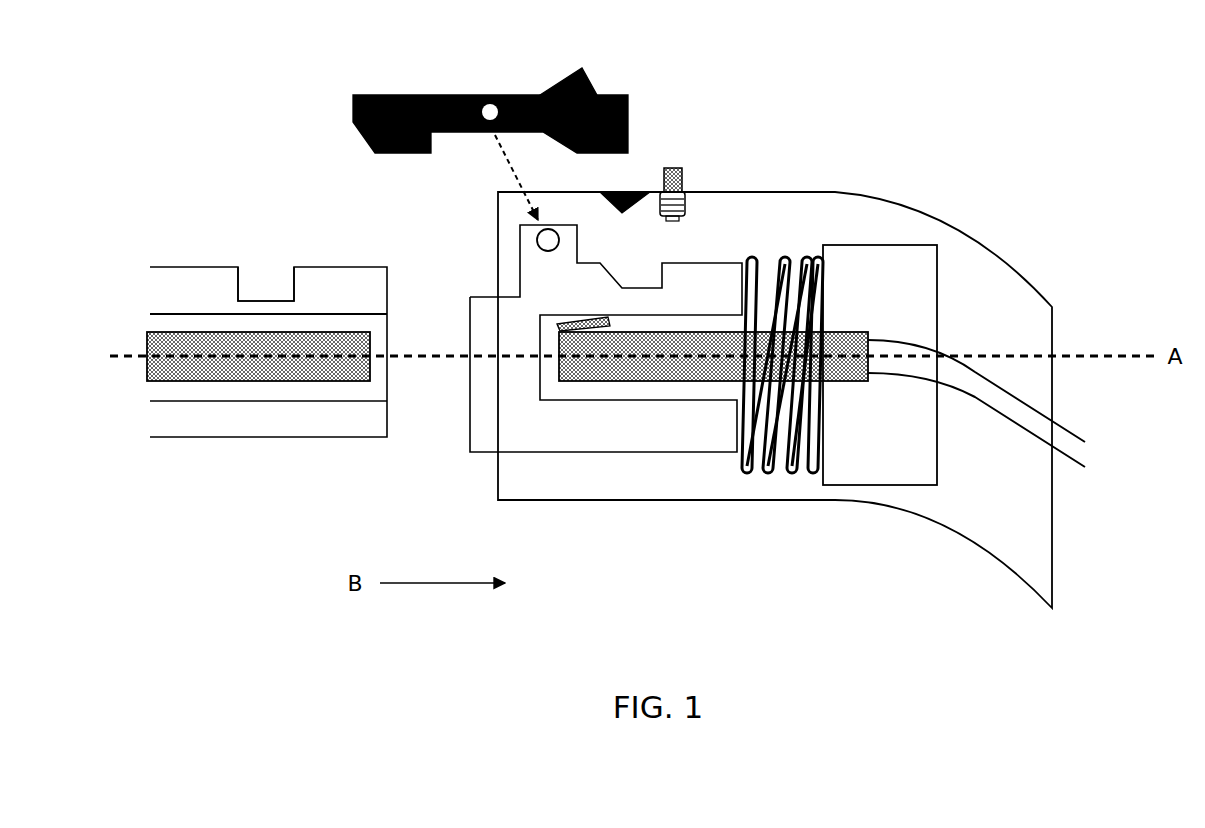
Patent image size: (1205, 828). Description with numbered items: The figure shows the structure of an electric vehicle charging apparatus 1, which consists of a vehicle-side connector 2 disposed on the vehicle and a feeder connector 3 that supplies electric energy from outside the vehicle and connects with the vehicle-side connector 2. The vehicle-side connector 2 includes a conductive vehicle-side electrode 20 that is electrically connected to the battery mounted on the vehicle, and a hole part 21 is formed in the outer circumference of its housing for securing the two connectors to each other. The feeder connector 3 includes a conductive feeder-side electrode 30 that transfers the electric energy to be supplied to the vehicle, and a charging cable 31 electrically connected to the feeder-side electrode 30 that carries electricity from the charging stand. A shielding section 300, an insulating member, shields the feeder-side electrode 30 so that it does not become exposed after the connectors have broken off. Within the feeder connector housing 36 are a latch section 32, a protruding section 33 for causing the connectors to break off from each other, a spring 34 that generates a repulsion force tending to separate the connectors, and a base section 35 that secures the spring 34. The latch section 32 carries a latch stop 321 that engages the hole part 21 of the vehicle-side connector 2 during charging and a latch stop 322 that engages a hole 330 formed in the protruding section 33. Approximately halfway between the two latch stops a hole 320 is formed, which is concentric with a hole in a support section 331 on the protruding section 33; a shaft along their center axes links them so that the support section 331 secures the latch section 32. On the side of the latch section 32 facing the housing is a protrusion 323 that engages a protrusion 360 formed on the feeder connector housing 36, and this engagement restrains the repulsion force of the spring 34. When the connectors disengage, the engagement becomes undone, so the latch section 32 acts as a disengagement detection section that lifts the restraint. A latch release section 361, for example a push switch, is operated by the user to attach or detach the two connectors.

The electric vehicle charging apparatus 1 is at (232, 158).
The vehicle-side connector 2 is at (342, 267).
The vehicle-side electrode 20 is at (237, 386).
The hole part 21 is at (267, 270).
The feeder connector 3 is at (745, 361).
The feeder-side electrode 30 is at (610, 386).
The shielding section 300 is at (583, 314).
The charging cable 31 is at (1022, 393).
The latch section 32 is at (494, 89).
The hole 320 is at (497, 94).
The latch stop 321 is at (352, 120).
The latch stop 322 is at (630, 137).
The protrusion 323 is at (592, 83).
The protruding section 33 is at (573, 363).
The hole 330 is at (640, 277).
The support section 331 is at (518, 240).
The spring 34 is at (788, 257).
The base section 35 is at (912, 305).
The feeder connector housing 36 is at (836, 188).
The protrusion 360 is at (625, 186).
The latch release section 361 is at (683, 175).